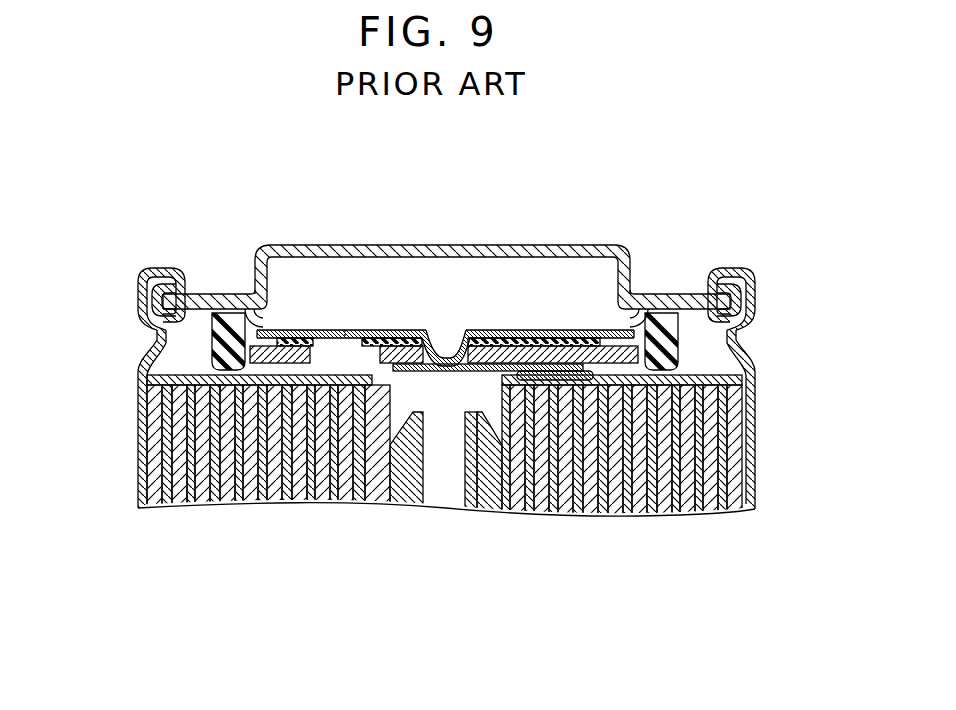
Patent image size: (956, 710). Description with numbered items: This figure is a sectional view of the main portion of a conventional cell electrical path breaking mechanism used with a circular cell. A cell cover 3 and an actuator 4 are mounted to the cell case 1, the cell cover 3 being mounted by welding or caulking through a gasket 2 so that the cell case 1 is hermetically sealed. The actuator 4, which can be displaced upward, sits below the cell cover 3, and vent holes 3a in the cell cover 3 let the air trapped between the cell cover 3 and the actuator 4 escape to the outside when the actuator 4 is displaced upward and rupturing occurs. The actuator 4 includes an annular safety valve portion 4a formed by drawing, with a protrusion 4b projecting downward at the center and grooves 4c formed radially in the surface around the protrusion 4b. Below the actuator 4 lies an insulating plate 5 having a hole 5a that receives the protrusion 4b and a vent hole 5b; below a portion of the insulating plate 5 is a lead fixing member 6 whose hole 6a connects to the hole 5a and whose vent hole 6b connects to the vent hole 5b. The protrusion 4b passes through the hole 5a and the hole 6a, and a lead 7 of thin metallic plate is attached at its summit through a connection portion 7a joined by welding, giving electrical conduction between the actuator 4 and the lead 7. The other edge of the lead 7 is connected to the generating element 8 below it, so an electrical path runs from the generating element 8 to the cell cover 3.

The cell case 1 is at (757, 422).
The gasket 2 is at (726, 265).
The cell cover 3 is at (598, 248).
The vent holes 3a is at (252, 248).
The actuator 4 is at (410, 328).
The safety valve portion 4a is at (522, 330).
The protrusion 4b is at (435, 366).
The grooves 4c is at (347, 332).
The insulating plate 5 is at (207, 349).
The hole 5a is at (490, 330).
The vent hole 5b is at (372, 332).
The lead fixing member 6 is at (577, 346).
The hole 6a is at (442, 330).
The vent hole 6b is at (322, 336).
The lead 7 is at (492, 373).
The connection portion 7a is at (443, 371).
The generating element 8 is at (457, 475).